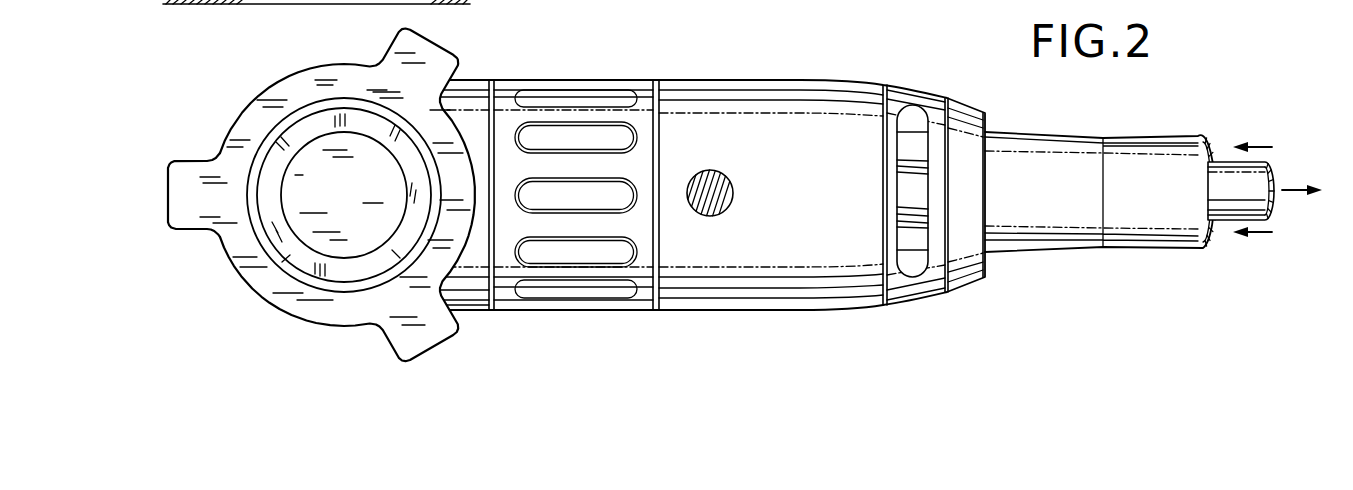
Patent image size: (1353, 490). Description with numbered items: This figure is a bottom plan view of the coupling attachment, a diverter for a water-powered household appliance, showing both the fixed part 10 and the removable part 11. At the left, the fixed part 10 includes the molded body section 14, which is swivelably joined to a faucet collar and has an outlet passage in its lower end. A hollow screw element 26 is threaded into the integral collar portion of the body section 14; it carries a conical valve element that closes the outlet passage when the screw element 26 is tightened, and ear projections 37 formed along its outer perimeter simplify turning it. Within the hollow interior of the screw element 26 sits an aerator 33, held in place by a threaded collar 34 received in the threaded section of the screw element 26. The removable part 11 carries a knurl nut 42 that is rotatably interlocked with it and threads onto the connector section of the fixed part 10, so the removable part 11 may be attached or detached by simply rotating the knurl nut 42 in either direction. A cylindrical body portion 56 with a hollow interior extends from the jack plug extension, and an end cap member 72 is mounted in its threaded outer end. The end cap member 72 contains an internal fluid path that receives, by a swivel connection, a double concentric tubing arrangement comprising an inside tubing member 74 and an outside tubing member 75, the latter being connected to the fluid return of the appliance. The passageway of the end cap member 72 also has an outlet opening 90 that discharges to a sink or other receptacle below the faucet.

The fixed part 10 is at (233, 96).
The removable part 11 is at (815, 68).
The body section 14 is at (470, 95).
The hollow screw element 26 is at (233, 130).
The aerator 33 is at (329, 194).
The threaded collar 34 is at (268, 3).
The ear projections 37 is at (172, 193).
The knurl nut 42 is at (582, 83).
The cylindrical body portion 56 is at (737, 92).
The end cap member 72 is at (912, 93).
The inside tubing member 74 is at (1260, 175).
The outside tubing member 75 is at (1145, 150).
The outlet opening 90 is at (918, 263).